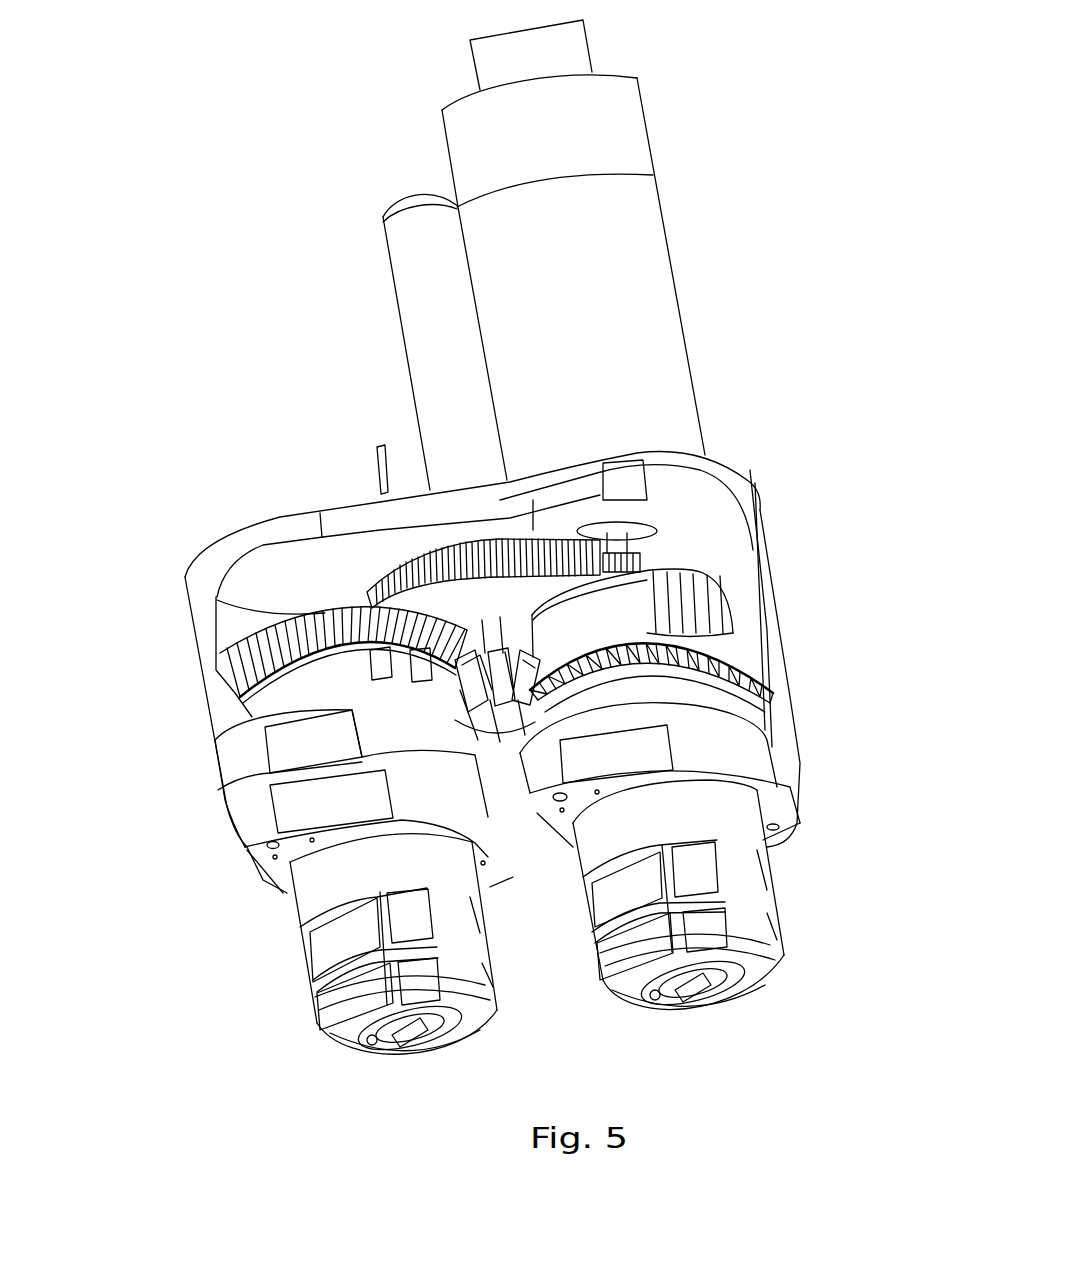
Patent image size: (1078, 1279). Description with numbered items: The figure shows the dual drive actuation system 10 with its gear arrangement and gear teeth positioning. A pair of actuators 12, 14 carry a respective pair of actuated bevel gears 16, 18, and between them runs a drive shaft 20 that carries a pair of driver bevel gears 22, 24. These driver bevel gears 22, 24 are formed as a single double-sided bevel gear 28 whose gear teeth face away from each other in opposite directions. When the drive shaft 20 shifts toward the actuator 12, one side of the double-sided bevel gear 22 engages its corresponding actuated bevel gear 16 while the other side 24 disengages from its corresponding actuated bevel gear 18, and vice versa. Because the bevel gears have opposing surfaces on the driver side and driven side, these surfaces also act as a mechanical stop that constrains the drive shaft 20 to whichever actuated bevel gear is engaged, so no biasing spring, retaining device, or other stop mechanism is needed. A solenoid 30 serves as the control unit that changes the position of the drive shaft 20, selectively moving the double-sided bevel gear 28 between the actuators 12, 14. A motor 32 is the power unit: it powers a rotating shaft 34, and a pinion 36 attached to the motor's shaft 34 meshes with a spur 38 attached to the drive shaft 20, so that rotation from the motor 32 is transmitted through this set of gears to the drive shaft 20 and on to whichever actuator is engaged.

The dual drive actuation system 10 is at (752, 43).
The actuator 12 is at (263, 883).
The actuator 14 is at (780, 785).
The actuated bevel gear 16 is at (220, 657).
The actuated bevel gear 18 is at (600, 670).
The drive shaft 20 is at (510, 627).
The driver bevel gear 22 is at (535, 673).
The driver bevel gear 24 is at (533, 718).
The double-sided bevel gear 28 is at (448, 695).
The solenoid 30 is at (402, 291).
The motor 32 is at (618, 218).
The rotating shaft 34 is at (650, 527).
The pinion 36 is at (633, 560).
The spur 38 is at (383, 577).